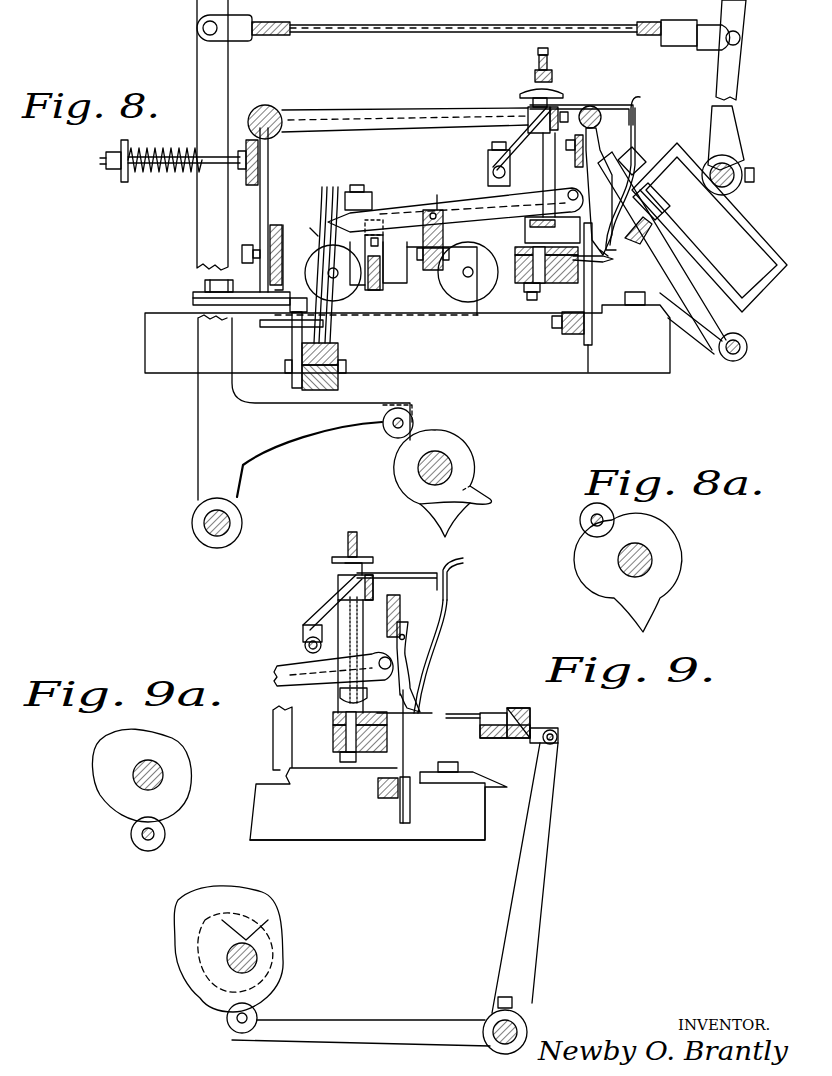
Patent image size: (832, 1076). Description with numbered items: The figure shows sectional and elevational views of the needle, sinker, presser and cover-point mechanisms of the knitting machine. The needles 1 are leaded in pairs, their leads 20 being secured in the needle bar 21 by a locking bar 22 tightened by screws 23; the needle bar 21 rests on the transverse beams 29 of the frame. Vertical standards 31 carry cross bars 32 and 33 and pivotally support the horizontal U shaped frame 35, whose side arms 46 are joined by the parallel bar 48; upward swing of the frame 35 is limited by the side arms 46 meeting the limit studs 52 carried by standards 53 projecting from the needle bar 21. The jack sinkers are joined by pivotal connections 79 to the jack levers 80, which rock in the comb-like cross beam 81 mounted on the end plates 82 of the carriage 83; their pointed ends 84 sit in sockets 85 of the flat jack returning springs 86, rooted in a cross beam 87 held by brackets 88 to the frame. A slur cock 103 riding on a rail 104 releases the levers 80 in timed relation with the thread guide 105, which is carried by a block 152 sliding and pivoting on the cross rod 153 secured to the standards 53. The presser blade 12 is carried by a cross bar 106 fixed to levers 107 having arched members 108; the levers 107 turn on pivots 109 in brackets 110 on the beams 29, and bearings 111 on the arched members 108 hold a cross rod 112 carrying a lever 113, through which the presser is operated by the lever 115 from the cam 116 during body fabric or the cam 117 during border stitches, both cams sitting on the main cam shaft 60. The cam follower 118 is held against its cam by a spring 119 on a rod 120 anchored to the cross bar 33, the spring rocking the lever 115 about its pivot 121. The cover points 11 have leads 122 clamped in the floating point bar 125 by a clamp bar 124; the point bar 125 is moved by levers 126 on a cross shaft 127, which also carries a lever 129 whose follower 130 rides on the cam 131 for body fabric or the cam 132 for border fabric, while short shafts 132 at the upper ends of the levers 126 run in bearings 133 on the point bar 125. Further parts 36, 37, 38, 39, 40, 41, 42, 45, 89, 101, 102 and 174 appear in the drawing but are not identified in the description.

In FIG. 8, the needles 1 is at (612, 259).
In FIG. 9, the needles 1 is at (412, 716).
In FIG. 9, the cover points 11 is at (466, 716).
In FIG. 8, the presser blade 12 is at (650, 232).
In FIG. 8, the leads 20 is at (558, 283).
In FIG. 9, the leads 20 is at (360, 740).
In FIG. 8, the needle bar 21 is at (526, 296).
In FIG. 9, the needle bar 21 is at (342, 760).
In FIG. 8, the locking bar 22 is at (520, 246).
In FIG. 9, the locking bar 22 is at (336, 718).
In FIG. 8, the tightening screws 23 is at (534, 308).
In FIG. 9, the tightening screws 23 is at (352, 762).
In FIG. 8, the transverse beams 29 is at (640, 373).
In FIG. 9, the transverse beams 29 is at (462, 840).
In FIG. 8, the vertical standards 31 is at (270, 186).
In FIG. 8, the cross bar 32 is at (278, 226).
In FIG. 8, the cross bar 33 is at (250, 186).
In FIG. 8, the horizontal U shaped frame 35 is at (282, 108).
In FIG. 8, the pawl 36 is at (600, 152).
In FIG. 9, the pawl 36 is at (404, 640).
In FIG. 8, the post 37 is at (563, 162).
In FIG. 9, the post 37 is at (377, 629).
In FIG. 8, the bracket 38 is at (610, 112).
In FIG. 9, the bracket 38 is at (400, 610).
In FIG. 8, the link 39 is at (524, 134).
In FIG. 8, the block 40 is at (570, 334).
In FIG. 9, the block 40 is at (385, 800).
In FIG. 8, the plate 41 is at (592, 344).
In FIG. 9, the plate 41 is at (404, 806).
In FIG. 8, the plate edge 42 is at (592, 364).
In FIG. 8, the roller 45 is at (592, 106).
In FIG. 8, the side arms 46 is at (434, 118).
In FIG. 8, the parallel bar 48 is at (260, 105).
In FIG. 8, the limit studs 52 is at (548, 58).
In FIG. 9, the vertical standards 53 is at (346, 548).
In FIG. 8, the main cam shaft 60 is at (446, 458).
In FIG. 8A, the main cam shaft 60 is at (646, 548).
In FIG. 9, the main cam shaft 60 is at (258, 954).
In FIG. 8, the pivotal connection 79 is at (567, 187).
In FIG. 9, the pivotal connection 79 is at (380, 656).
In FIG. 8, the jack levers 80 is at (482, 206).
In FIG. 9, the jack levers 80 is at (277, 678).
In FIG. 8, the cross beam 81 is at (424, 292).
In FIG. 8, the end plates 82 is at (394, 304).
In FIG. 8, the carriage 83 is at (478, 316).
In FIG. 8, the pointed ends 84 is at (340, 200).
In FIG. 8, the sockets 85 is at (316, 232).
In FIG. 8, the jack returning springs 86 is at (325, 256).
In FIG. 8, the cross beam 87 is at (338, 352).
In FIG. 8, the brackets 88 is at (292, 344).
In FIG. 8, the roller 89 is at (482, 246).
In FIG. 8, the plate 101 is at (372, 200).
In FIG. 8, the column 102 is at (402, 210).
In FIG. 8, the slur cock 103 is at (338, 284).
In FIG. 8, the rail 104 is at (560, 106).
In FIG. 8, the thread guide 105 is at (636, 138).
In FIG. 9, the thread guide 105 is at (424, 665).
In FIG. 8, the cross bar 106 is at (664, 210).
In FIG. 8, the levers 107 is at (672, 268).
In FIG. 8, the arched members 108 is at (752, 262).
In FIG. 8, the pivots 109 is at (747, 347).
In FIG. 8, the brackets 110 is at (697, 336).
In FIG. 8, the bearings 111 is at (755, 178).
In FIG. 8, the cross rod 112 is at (735, 170).
In FIG. 8, the lever 113 is at (735, 78).
In FIG. 8, the lever 115 is at (200, 29).
In FIG. 8, the cam 116 is at (484, 496).
In FIG. 8, the cam 117 is at (438, 520).
In FIG. 8A, the cam 117 is at (665, 600).
In FIG. 8, the cam follower 118 is at (412, 416).
In FIG. 8, the spring 119 is at (150, 180).
In FIG. 8, the rod 120 is at (106, 163).
In FIG. 8, the pivot 121 is at (238, 520).
In FIG. 9, the leads 122 is at (496, 714).
In FIG. 9, the clamp bar 124 is at (528, 710).
In FIG. 9, the point bar 125 is at (500, 738).
In FIG. 9, the levers 126 is at (538, 916).
In FIG. 9, the cross shaft 127 is at (492, 1022).
In FIG. 9, the lever 129 is at (336, 1045).
In FIG. 9, the cam follower 130 is at (256, 1008).
In FIG. 9, the cam 131 is at (218, 892).
In FIG. 9, the cam 132 is at (560, 736).
In FIG. 9A, the cam 132 is at (178, 752).
In FIG. 9, the bearings 133 is at (560, 744).
In FIG. 8, the block 152 is at (488, 158).
In FIG. 9, the block 152 is at (303, 638).
In FIG. 8, the cross rod 153 is at (492, 172).
In FIG. 9, the cross rod 153 is at (306, 648).
In FIG. 8, the rod 174 is at (468, 20).